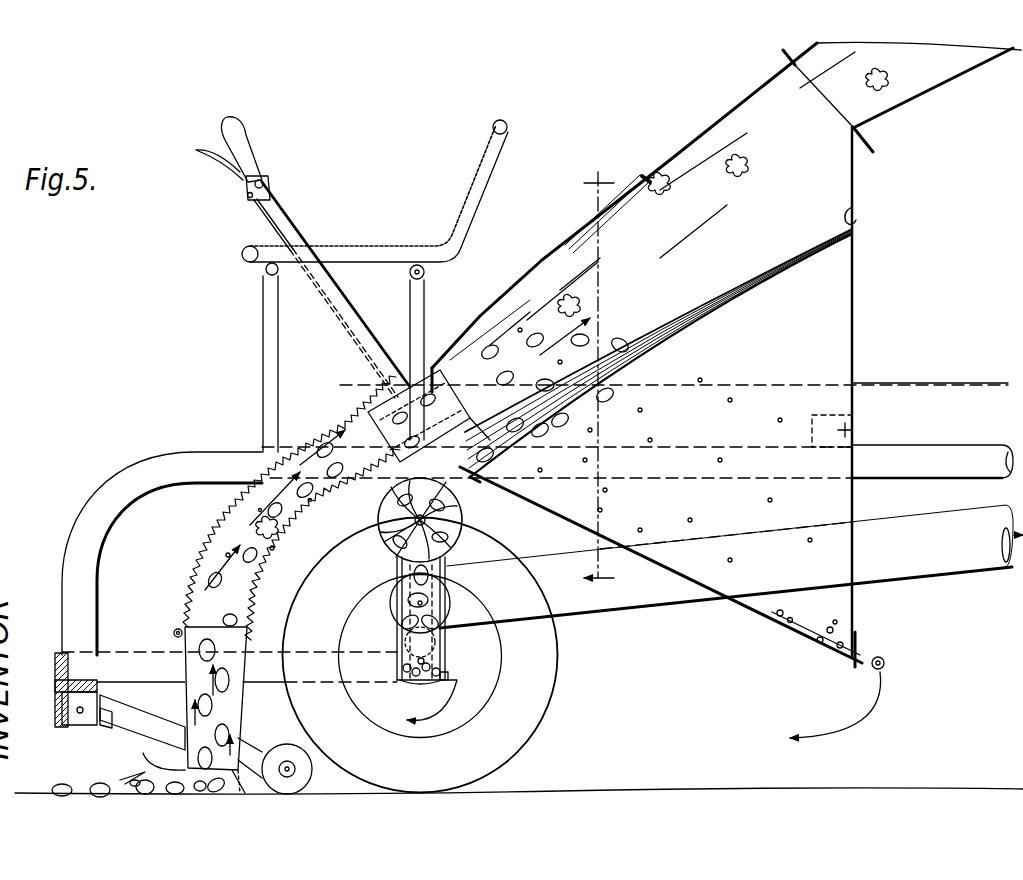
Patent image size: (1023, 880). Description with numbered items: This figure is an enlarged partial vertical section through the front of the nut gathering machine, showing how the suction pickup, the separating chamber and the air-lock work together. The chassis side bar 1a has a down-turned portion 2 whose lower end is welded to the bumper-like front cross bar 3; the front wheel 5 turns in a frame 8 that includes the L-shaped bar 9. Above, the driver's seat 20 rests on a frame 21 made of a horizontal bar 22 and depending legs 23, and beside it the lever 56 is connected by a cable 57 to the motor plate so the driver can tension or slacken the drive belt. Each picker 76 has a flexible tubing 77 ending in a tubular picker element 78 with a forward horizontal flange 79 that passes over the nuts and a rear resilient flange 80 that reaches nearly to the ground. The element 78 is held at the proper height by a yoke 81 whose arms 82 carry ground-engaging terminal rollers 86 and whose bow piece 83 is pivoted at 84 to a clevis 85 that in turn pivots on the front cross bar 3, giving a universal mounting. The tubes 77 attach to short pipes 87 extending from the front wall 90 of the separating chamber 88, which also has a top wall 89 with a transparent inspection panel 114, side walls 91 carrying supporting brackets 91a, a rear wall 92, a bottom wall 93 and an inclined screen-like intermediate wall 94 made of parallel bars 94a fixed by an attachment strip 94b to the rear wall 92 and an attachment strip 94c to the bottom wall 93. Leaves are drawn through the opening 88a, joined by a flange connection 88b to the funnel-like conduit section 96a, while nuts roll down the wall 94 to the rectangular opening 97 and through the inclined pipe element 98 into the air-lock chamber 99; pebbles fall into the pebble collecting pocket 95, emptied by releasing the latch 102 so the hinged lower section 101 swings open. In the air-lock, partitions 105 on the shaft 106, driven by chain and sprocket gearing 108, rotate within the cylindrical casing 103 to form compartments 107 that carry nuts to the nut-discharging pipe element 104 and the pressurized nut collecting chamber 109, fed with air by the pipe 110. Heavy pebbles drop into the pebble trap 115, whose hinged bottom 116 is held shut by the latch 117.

The side bar 1a is at (222, 468).
The down-turned portion 2 is at (62, 592).
The front cross bar 3 is at (55, 687).
The front wheel 5 is at (543, 669).
The frame 8 is at (118, 668).
The bar 9 is at (599, 381).
The driver's seat 20 is at (345, 246).
The frame 21 is at (417, 265).
The horizontal bar 22 is at (265, 274).
The leg 23 is at (263, 317).
The lever 56 is at (268, 216).
The cable 57 is at (900, 383).
The picker 76 is at (222, 530).
The flexible tubing 77 is at (200, 554).
The picker element 78 is at (185, 668).
The flange 79 is at (142, 760).
The resilient flange 80 is at (244, 783).
The yoke 81 is at (161, 730).
The arm 82 is at (252, 732).
The bow piece 83 is at (133, 728).
The pivot 84 is at (110, 728).
The clevis 85 is at (81, 716).
The terminal roller 86 is at (300, 785).
The pipe 87 is at (380, 406).
The separating chamber 88 is at (497, 330).
The opening 88a is at (790, 66).
The flange connection 88b is at (879, 155).
The top wall 89 is at (725, 122).
The front wall 90 is at (450, 366).
The side wall 91 is at (520, 310).
The bracket 91a is at (855, 430).
The rear wall 92 is at (855, 323).
The bottom wall 93 is at (737, 604).
The intermediate wall 94 is at (810, 258).
The parallel bars 94a is at (853, 232).
The attachment strip 94b is at (855, 210).
The attachment strip 94c is at (482, 478).
The pebble collecting pocket 95 is at (832, 626).
The funnel-like section 96a is at (925, 97).
The rectangular opening 97 is at (480, 440).
The pipe element 98 is at (457, 495).
The air-lock chamber 99 is at (453, 549).
The hinged lower section 101 is at (800, 640).
The latch 102 is at (873, 664).
The cylindrical casing 103 is at (388, 518).
The nut-discharging pipe element 104 is at (397, 578).
The partition 105 is at (397, 535).
The shaft 106 is at (402, 552).
The compartment 107 is at (442, 522).
The chain and sprocket gearing 108 is at (446, 577).
The nut collecting chamber 109 is at (446, 603).
The pipe 110 is at (457, 650).
The transparent panel 114 is at (572, 242).
The pebble trap 115 is at (398, 637).
The hinged bottom 116 is at (404, 685).
The latch 117 is at (450, 684).